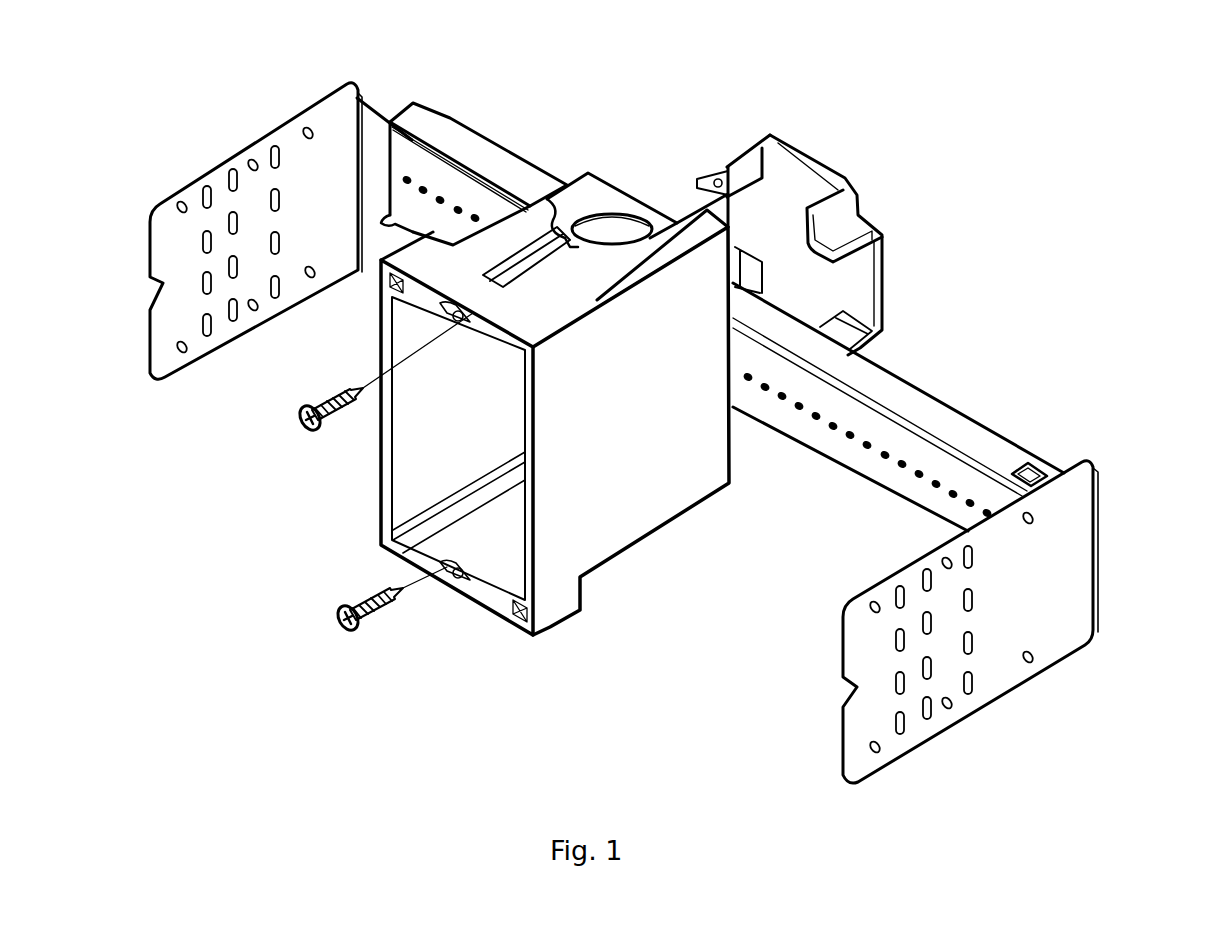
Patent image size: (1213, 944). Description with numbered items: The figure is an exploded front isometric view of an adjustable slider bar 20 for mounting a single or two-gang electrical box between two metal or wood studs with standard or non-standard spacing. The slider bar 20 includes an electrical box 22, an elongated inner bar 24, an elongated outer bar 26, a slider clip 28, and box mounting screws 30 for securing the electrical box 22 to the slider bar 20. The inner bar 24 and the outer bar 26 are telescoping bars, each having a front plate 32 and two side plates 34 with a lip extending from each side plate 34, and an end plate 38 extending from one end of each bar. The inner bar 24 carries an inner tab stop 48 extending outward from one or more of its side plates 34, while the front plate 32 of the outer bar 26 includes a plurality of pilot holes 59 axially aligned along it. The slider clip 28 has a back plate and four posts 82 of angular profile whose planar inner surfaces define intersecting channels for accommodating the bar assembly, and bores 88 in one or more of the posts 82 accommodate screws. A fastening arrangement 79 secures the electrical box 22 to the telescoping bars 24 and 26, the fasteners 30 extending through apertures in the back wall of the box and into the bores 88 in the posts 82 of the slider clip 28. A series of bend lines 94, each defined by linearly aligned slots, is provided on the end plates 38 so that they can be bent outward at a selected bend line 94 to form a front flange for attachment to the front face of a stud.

The adjustable slider bar 20 is at (998, 200).
The electrical box 22 is at (654, 532).
The elongated inner bar 24 is at (432, 112).
The elongated outer bar 26 is at (918, 385).
The slider clip 28 is at (815, 150).
The box mounting screws 30 is at (367, 618).
The front plate 32 is at (843, 457).
The side plates 34 is at (487, 165).
The end plate 38 is at (343, 210).
The inner tab stop 48 is at (1045, 465).
The pilot holes 59 is at (935, 487).
The fastening arrangement 79 is at (282, 570).
The posts 82 is at (738, 172).
The bores 88 is at (718, 183).
The bend lines 94 is at (970, 702).